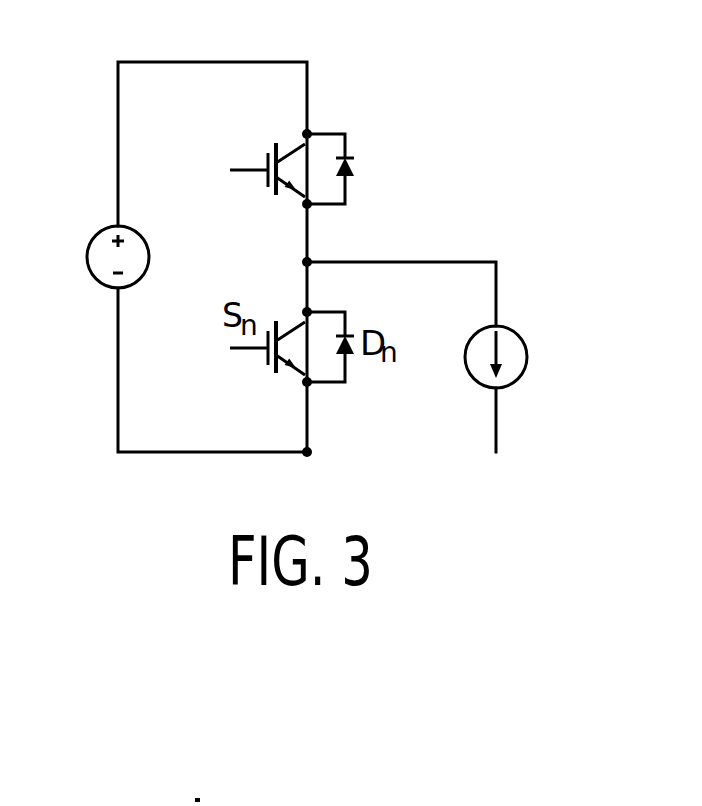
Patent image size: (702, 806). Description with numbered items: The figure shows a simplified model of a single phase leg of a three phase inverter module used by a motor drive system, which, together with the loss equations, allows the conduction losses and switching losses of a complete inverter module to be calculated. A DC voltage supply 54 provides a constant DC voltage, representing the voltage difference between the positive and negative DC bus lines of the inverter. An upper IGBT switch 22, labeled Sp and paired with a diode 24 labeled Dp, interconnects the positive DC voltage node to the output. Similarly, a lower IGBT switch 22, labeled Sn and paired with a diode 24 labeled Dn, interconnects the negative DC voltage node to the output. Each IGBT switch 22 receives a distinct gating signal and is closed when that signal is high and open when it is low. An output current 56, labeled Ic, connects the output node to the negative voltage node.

The IGBT switch 22 is at (247, 117).
The diode 24 is at (363, 133).
The DC voltage supply 54 is at (87, 257).
The output current 56 is at (527, 357).